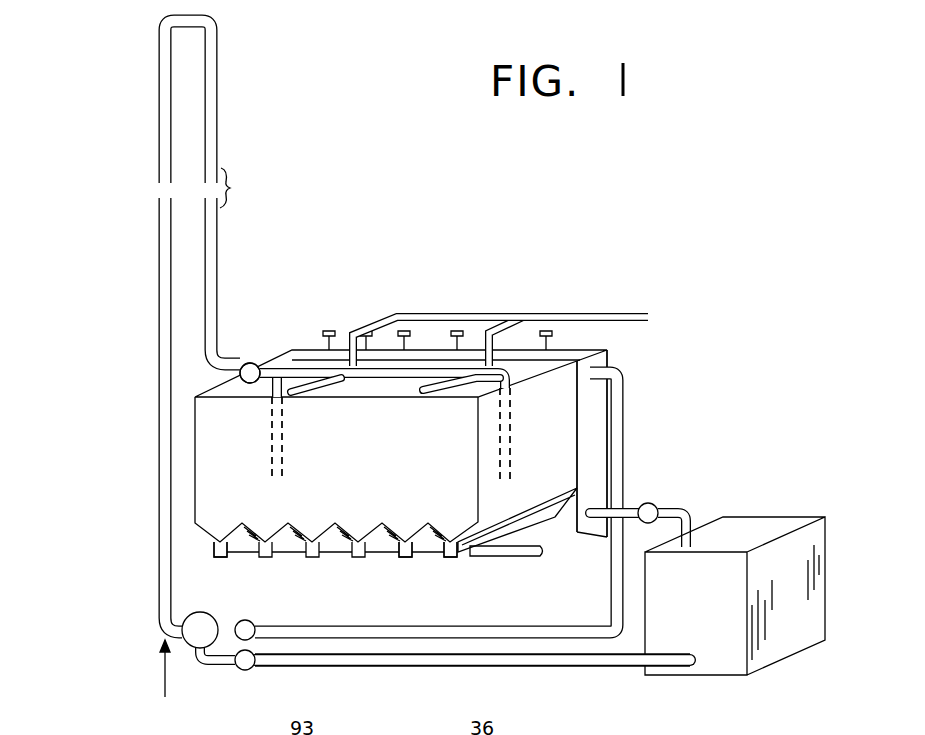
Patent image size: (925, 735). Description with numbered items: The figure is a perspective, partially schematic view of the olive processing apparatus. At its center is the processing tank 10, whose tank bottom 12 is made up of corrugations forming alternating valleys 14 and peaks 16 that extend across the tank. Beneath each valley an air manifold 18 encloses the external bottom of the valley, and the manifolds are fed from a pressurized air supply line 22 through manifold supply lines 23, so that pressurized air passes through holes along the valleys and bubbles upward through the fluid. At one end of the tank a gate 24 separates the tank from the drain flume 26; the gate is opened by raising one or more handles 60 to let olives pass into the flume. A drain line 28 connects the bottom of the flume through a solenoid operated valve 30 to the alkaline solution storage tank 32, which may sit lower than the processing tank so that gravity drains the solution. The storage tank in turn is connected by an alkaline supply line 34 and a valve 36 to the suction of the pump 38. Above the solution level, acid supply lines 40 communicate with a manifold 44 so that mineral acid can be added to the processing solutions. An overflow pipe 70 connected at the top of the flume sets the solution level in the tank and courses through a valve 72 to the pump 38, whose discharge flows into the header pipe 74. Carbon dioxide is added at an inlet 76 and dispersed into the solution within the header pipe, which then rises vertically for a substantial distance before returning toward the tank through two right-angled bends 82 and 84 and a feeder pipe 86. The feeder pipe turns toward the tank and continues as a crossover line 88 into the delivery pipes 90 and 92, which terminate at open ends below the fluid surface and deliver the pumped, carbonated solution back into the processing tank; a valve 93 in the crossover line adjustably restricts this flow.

The processing tank 10 is at (222, 488).
The tank bottom 12 is at (400, 566).
The valleys 14 is at (300, 562).
The peaks 16 is at (260, 535).
The air manifold 18 is at (452, 560).
The pressurized air supply line 22 is at (520, 556).
The manifold supply lines 23 is at (525, 557).
The gate 24 is at (533, 378).
The drain flume 26 is at (612, 350).
The drain line 28 is at (672, 512).
The solenoid operated valve 30 is at (648, 500).
The alkaline solution storage tank 32 is at (790, 520).
The alkaline supply line 34 is at (498, 667).
The valve 36 is at (247, 671).
The pump 38 is at (212, 665).
The acid supply lines 40 is at (300, 392).
The manifold 44 is at (603, 312).
The handles 60 is at (366, 330).
The overflow pipe 70 is at (625, 420).
The valve 72 is at (248, 620).
The header pipe 74 is at (157, 355).
The inlet 76 is at (163, 646).
The right-angled bend 82 is at (158, 22).
The right-angled bend 84 is at (218, 24).
The feeder pipe 86 is at (218, 264).
The crossover line 88 is at (242, 365).
The delivery pipe 90 is at (262, 396).
The delivery pipe 92 is at (480, 386).
The valve 93 is at (258, 366).